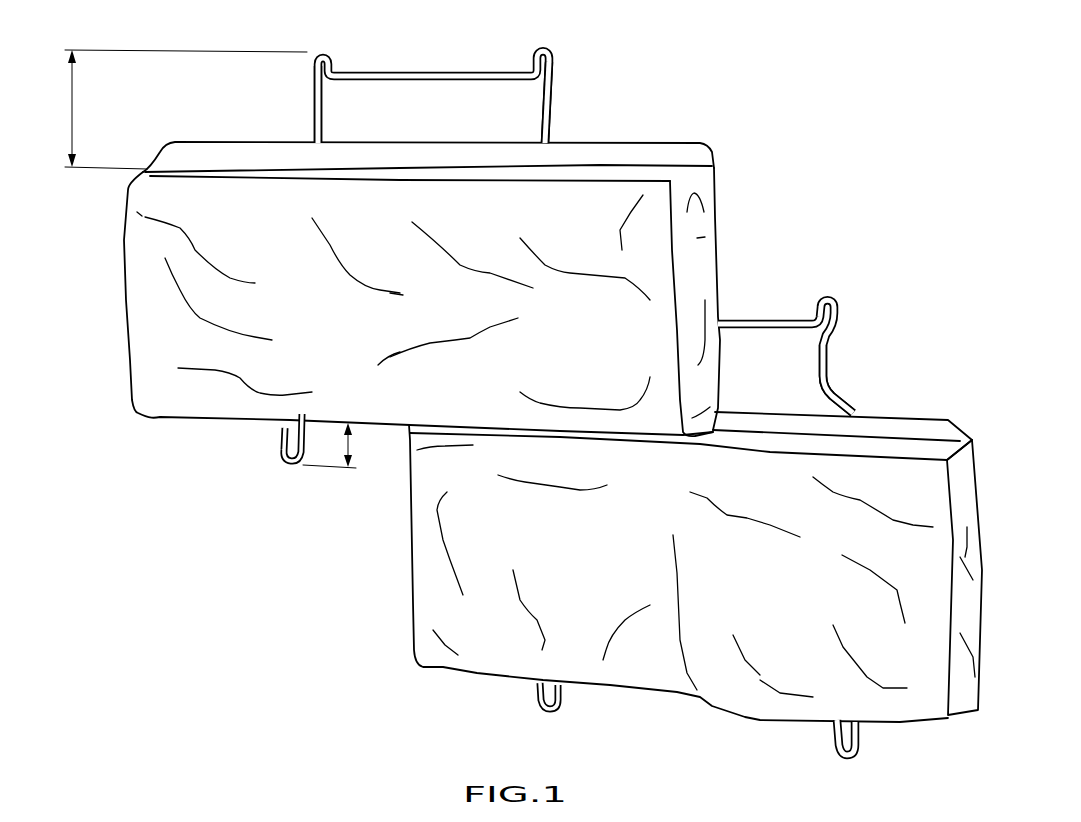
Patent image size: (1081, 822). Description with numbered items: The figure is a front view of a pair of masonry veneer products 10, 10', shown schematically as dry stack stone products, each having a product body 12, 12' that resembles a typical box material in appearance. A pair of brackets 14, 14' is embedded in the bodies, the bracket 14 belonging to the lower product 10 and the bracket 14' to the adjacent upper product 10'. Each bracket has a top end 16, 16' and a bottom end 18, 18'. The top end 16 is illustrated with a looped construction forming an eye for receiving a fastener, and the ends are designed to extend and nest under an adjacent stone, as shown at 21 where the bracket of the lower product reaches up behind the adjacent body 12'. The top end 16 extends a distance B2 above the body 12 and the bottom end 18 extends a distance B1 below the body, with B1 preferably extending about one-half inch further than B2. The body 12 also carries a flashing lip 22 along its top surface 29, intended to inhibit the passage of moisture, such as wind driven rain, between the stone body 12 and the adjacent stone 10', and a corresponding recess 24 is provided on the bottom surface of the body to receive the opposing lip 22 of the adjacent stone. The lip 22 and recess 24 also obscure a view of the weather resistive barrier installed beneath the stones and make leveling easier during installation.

The masonry veneer product 10 is at (711, 526).
The adjacent masonry veneer product 10' is at (475, 245).
The product body 12 is at (667, 573).
The adjacent product body 12' is at (445, 289).
The bracket 14 is at (851, 379).
The bracket 14' is at (463, 102).
The top end 16 is at (815, 347).
The top end 16' is at (457, 76).
The bottom end 18 is at (883, 751).
The bottom end 18' is at (267, 447).
The nesting location 21 is at (740, 298).
The flashing lip 22 is at (883, 420).
The recess 24 is at (725, 418).
The top surface 29 is at (942, 448).
The bottom extension distance B1 is at (352, 447).
The top extension distance B2 is at (184, 109).